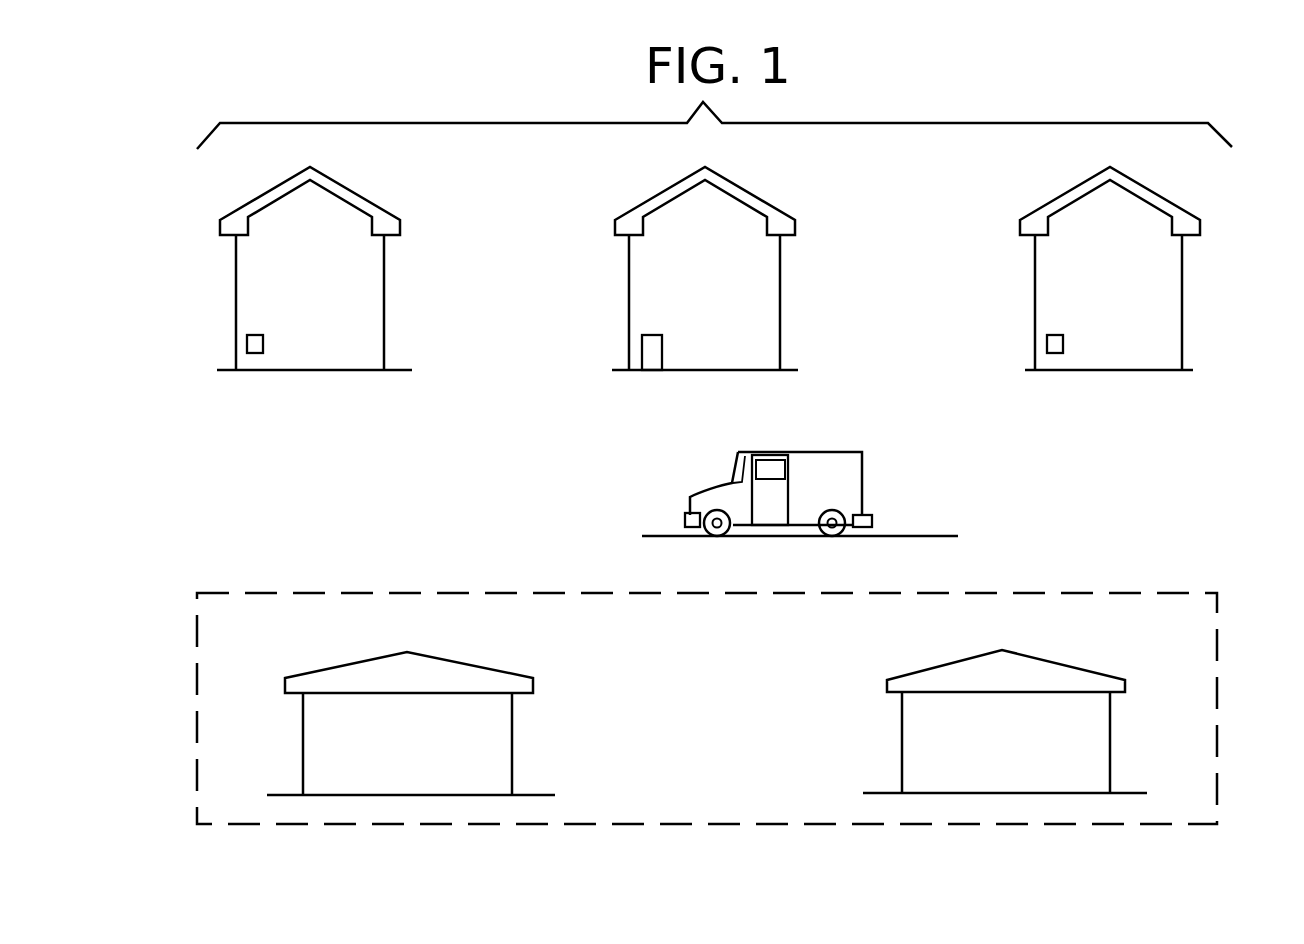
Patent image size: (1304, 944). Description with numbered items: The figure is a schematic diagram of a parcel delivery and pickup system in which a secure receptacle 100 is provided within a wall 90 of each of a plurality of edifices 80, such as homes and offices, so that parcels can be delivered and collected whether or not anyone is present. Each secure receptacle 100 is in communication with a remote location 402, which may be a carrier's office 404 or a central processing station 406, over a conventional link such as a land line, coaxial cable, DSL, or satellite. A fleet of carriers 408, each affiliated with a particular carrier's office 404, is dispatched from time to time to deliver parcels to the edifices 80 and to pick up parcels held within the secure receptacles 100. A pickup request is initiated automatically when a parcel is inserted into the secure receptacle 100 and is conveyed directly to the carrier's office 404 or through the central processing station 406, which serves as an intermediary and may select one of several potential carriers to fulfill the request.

The edifice 80 is at (340, 213).
The wall 90 is at (372, 303).
The secure receptacle 100 is at (250, 344).
The remote location 402 is at (228, 587).
The carrier's office 404 is at (913, 718).
The central processing station 406 is at (502, 723).
The carrier 408 is at (827, 465).